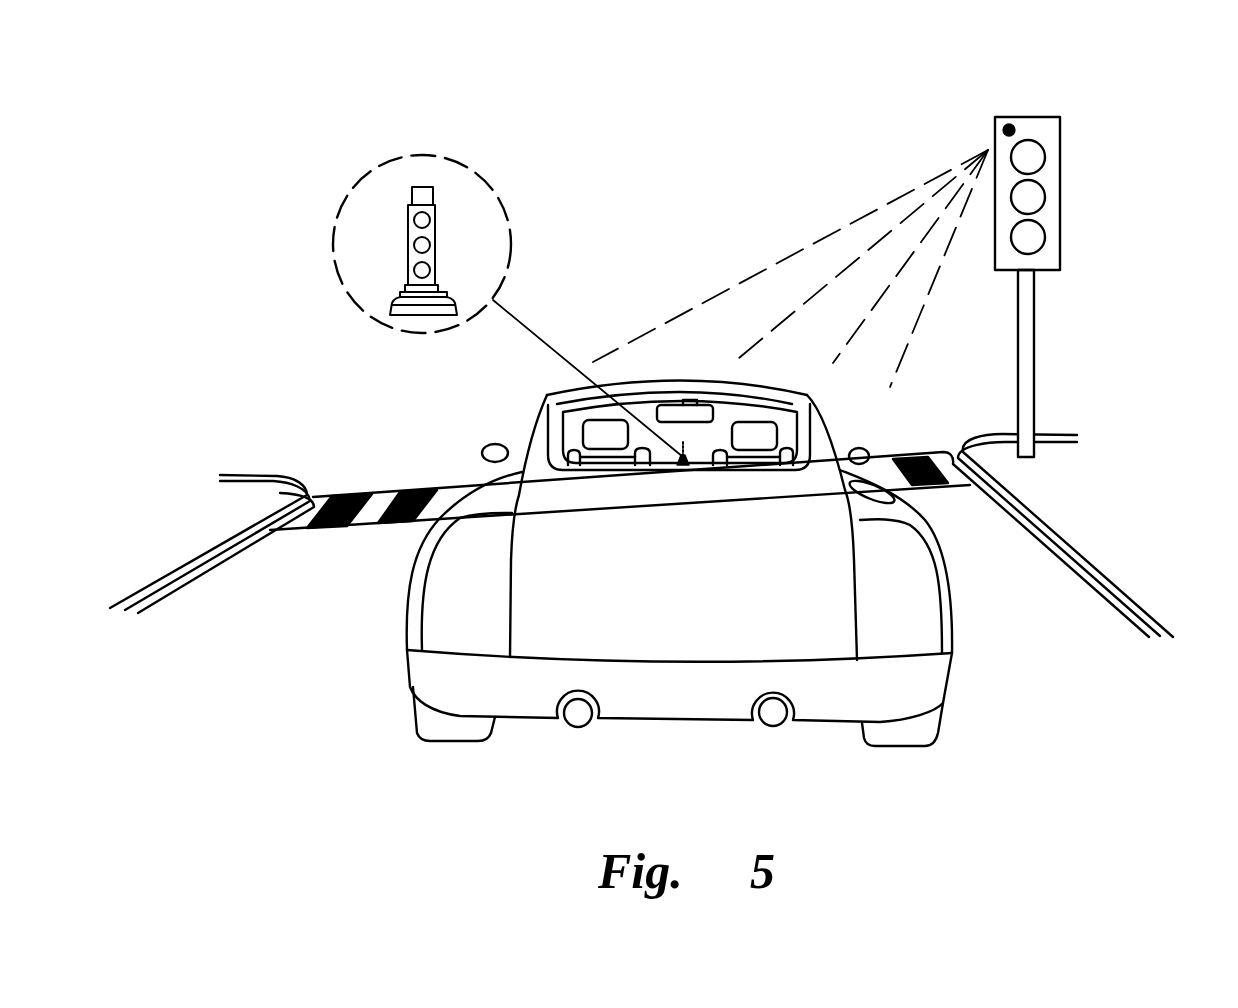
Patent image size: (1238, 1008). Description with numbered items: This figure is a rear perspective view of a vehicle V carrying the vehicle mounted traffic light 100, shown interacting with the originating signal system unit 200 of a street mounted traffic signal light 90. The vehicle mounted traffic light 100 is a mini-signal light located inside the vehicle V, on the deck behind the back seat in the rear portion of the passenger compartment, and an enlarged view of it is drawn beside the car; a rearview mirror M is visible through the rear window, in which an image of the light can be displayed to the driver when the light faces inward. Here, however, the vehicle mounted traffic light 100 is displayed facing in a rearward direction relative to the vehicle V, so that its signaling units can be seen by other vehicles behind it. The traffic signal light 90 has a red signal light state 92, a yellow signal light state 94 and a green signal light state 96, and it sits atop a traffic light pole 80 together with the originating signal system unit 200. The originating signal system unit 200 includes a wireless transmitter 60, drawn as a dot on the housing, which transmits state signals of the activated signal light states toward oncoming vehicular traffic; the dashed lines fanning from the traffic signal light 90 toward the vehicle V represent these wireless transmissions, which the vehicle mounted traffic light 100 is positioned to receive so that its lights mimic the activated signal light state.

The vehicle mounted traffic light 100 is at (487, 185).
The originating signal system unit 200 is at (1085, 119).
The wireless transmitter 60 is at (1012, 124).
The red signal light state 92 is at (1045, 155).
The yellow signal light state 94 is at (1045, 195).
The green signal light state 96 is at (1045, 235).
The traffic signal light 90 is at (1060, 270).
The traffic light pole 80 is at (1035, 342).
The rearview mirror M is at (698, 402).
The vehicle V is at (421, 550).